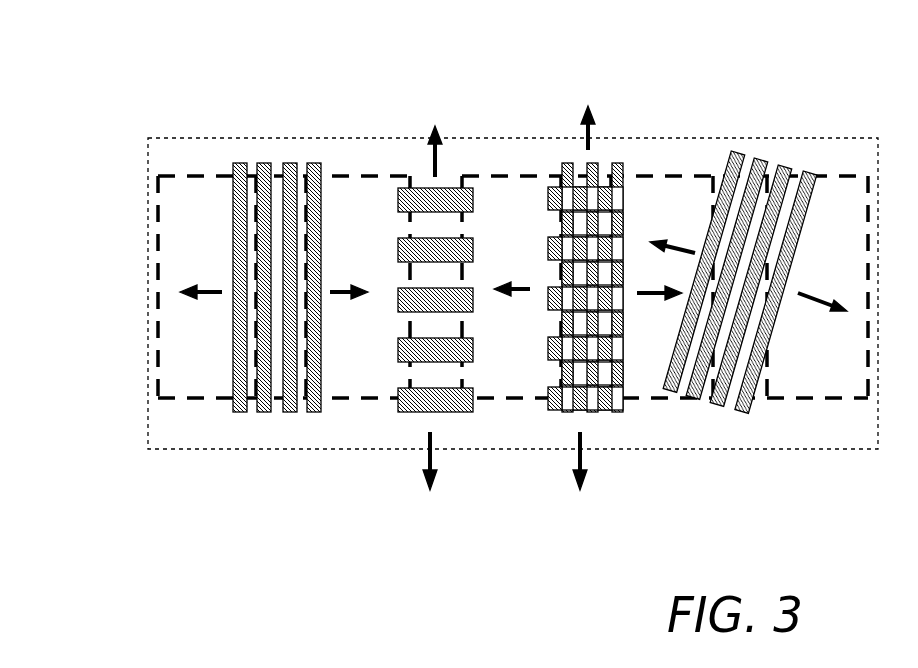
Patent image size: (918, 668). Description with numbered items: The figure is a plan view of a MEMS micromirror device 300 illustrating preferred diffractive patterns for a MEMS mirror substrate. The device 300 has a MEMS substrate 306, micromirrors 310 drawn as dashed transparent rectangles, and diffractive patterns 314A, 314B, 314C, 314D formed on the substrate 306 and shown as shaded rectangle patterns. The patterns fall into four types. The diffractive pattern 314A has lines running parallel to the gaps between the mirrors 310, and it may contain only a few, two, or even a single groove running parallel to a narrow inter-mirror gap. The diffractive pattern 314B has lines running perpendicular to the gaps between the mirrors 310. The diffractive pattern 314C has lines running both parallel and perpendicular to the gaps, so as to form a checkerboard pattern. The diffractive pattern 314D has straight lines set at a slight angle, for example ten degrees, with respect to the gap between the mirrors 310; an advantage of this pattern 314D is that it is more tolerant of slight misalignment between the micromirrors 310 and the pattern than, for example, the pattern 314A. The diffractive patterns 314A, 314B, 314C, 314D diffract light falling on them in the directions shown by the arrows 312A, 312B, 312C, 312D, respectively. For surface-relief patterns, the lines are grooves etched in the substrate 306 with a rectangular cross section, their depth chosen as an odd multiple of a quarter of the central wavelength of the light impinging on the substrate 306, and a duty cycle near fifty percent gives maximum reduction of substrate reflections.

The MEMS micromirror device 300 is at (111, 164).
The MEMS substrate 306 is at (147, 431).
The micromirrors 310 is at (847, 384).
The arrow 312A is at (217, 292).
The arrow 312B is at (437, 158).
The arrow 312C is at (591, 148).
The arrow 312D is at (690, 250).
The diffractive pattern 314A is at (327, 135).
The diffractive pattern 314B is at (487, 130).
The diffractive pattern 314C is at (637, 125).
The diffractive pattern 314D is at (832, 158).